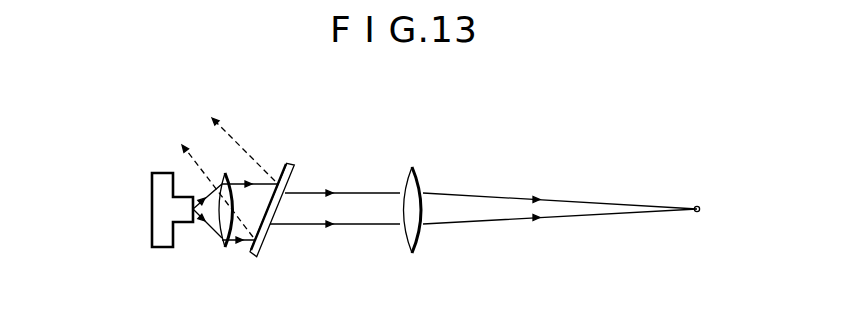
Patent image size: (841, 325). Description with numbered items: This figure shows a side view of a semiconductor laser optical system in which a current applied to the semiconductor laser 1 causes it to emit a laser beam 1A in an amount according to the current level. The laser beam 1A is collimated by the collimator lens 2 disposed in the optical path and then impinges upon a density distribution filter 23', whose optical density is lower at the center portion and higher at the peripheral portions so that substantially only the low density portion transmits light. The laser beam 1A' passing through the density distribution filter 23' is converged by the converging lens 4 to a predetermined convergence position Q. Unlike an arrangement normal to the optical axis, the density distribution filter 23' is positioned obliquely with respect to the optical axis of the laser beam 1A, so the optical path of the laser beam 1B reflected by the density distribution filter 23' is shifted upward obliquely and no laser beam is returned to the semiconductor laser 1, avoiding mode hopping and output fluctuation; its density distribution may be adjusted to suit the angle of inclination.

The semiconductor laser 1 is at (153, 193).
The laser beam 1A is at (221, 172).
The reflected laser beam 1B is at (254, 161).
The collimator lens 2 is at (226, 240).
The density distribution filter 23' is at (296, 186).
The laser beam passing through the density distribution filter 1A' is at (483, 186).
The converging lens 4 is at (417, 176).
The convergence position Q is at (701, 205).